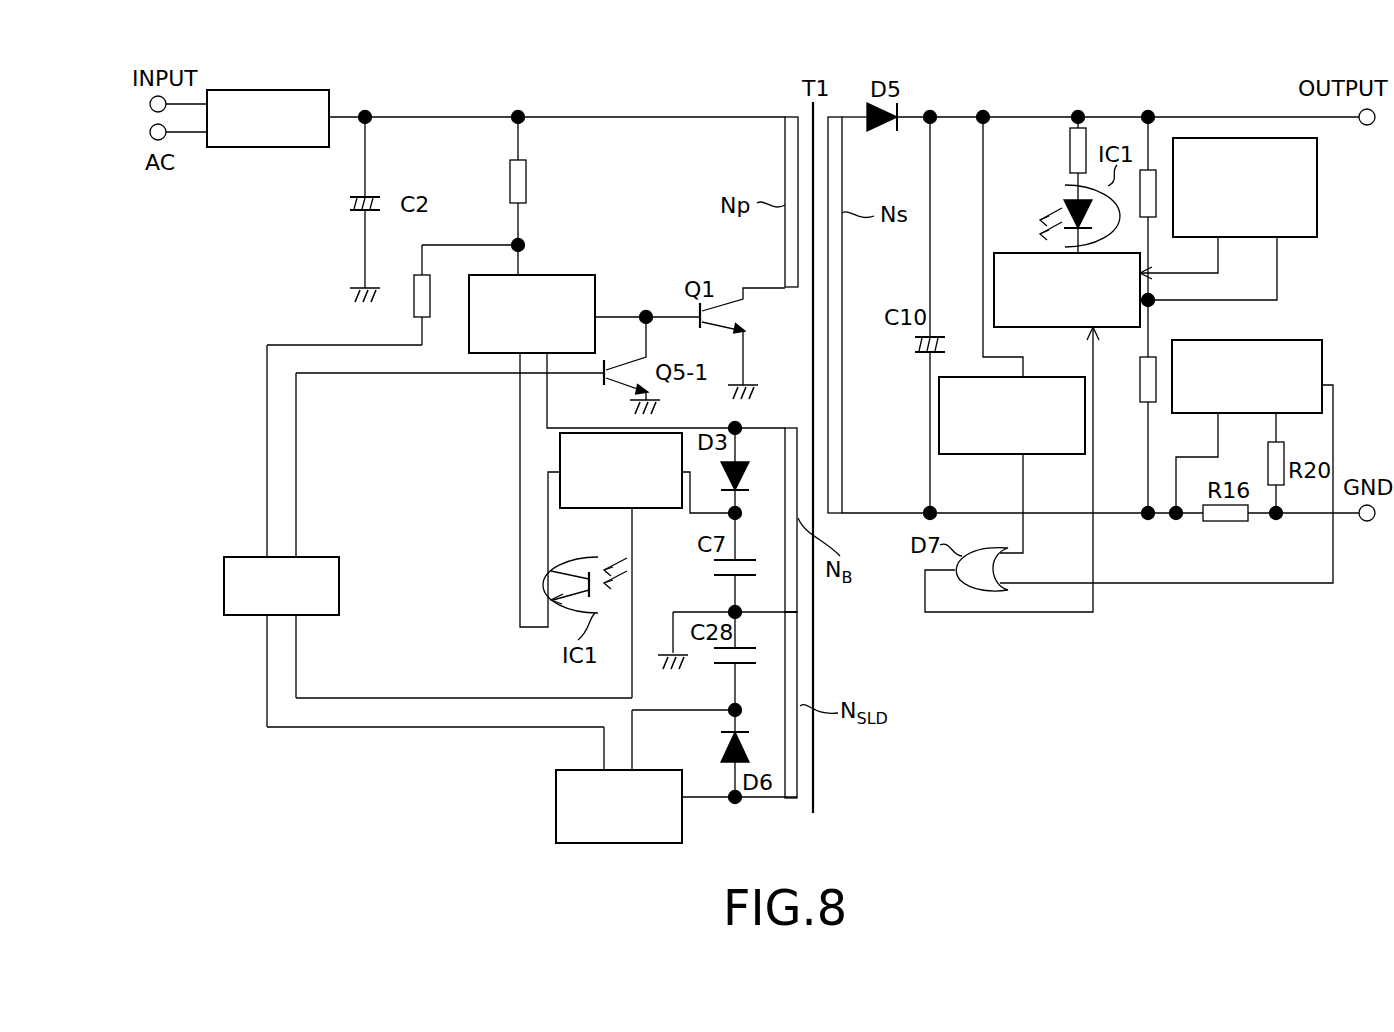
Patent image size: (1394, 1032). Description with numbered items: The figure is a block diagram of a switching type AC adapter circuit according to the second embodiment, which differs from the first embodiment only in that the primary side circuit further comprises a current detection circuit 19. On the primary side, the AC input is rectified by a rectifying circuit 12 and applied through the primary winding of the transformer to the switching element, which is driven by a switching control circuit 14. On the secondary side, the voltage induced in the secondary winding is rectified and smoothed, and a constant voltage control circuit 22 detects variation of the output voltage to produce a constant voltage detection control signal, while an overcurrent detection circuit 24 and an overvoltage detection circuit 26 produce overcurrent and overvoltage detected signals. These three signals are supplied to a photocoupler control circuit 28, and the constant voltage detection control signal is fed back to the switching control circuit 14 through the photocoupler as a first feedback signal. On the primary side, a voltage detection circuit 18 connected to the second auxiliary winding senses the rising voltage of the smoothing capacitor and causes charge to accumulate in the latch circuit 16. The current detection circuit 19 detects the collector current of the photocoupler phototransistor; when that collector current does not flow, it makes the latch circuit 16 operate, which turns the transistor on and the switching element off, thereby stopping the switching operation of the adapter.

The rectifying circuit 12 is at (266, 90).
The switching control circuit 14 is at (558, 275).
The latch circuit 16 is at (224, 588).
The voltage detection circuit 18 is at (556, 797).
The current detection circuit 19 is at (560, 465).
The constant voltage control circuit 22 is at (1317, 200).
The overcurrent detection circuit 24 is at (1301, 340).
The overvoltage detection circuit 26 is at (1053, 454).
The photocoupler control circuit 28 is at (1006, 253).